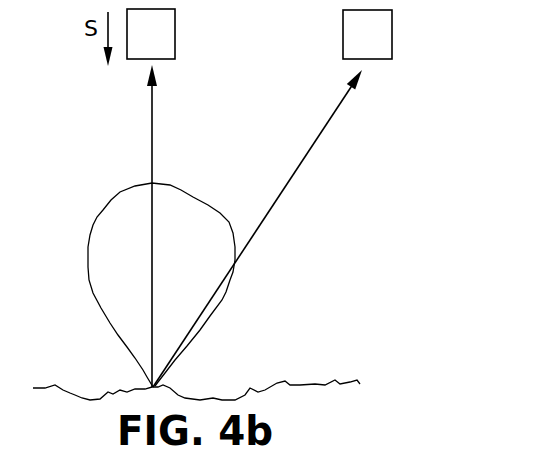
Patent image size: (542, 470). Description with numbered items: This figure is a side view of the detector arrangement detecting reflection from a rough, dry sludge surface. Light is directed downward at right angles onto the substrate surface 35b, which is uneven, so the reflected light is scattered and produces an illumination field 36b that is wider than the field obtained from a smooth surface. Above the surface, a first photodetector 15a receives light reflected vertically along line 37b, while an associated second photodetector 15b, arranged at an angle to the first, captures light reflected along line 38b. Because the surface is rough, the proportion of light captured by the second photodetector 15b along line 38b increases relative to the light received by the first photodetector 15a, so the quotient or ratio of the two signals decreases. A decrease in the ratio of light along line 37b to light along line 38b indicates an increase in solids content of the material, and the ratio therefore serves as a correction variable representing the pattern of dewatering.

The first photodetector 15a is at (165, 33).
The second photodetector 15b is at (378, 36).
The substrate surface 35b is at (292, 383).
The illumination field 36b is at (113, 232).
The line 37b is at (152, 130).
The line 38b is at (303, 161).